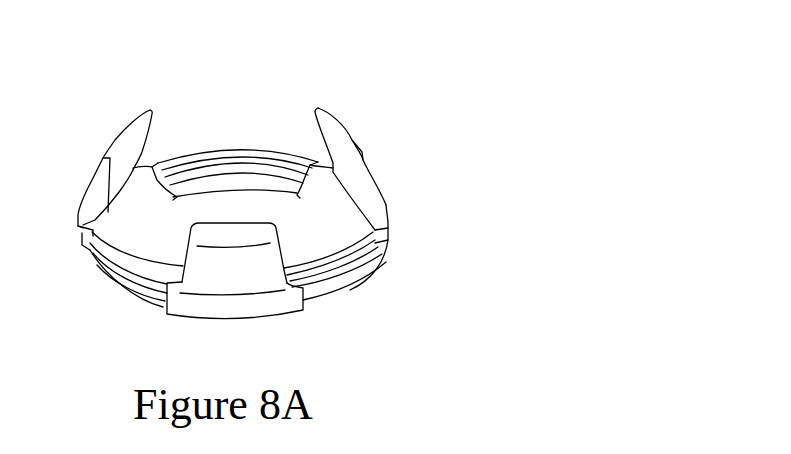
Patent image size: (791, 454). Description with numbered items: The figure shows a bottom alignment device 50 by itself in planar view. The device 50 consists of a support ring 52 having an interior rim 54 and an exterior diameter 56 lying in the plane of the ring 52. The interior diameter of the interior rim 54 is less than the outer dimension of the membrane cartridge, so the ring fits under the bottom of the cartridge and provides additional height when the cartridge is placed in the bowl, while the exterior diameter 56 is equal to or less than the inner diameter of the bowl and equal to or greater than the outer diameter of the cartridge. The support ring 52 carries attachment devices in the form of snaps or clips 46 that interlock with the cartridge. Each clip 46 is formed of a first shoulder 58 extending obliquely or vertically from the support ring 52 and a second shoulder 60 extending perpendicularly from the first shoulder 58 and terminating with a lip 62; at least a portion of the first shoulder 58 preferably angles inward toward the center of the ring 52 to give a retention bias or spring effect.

The clip 46 is at (150, 116).
The alignment device 50 is at (305, 87).
The support ring 52 is at (132, 283).
The interior rim 54 is at (328, 250).
The exterior diameter 56 is at (253, 313).
The first shoulder 58 is at (388, 204).
The second shoulder 60 is at (350, 124).
The lip 62 is at (365, 158).